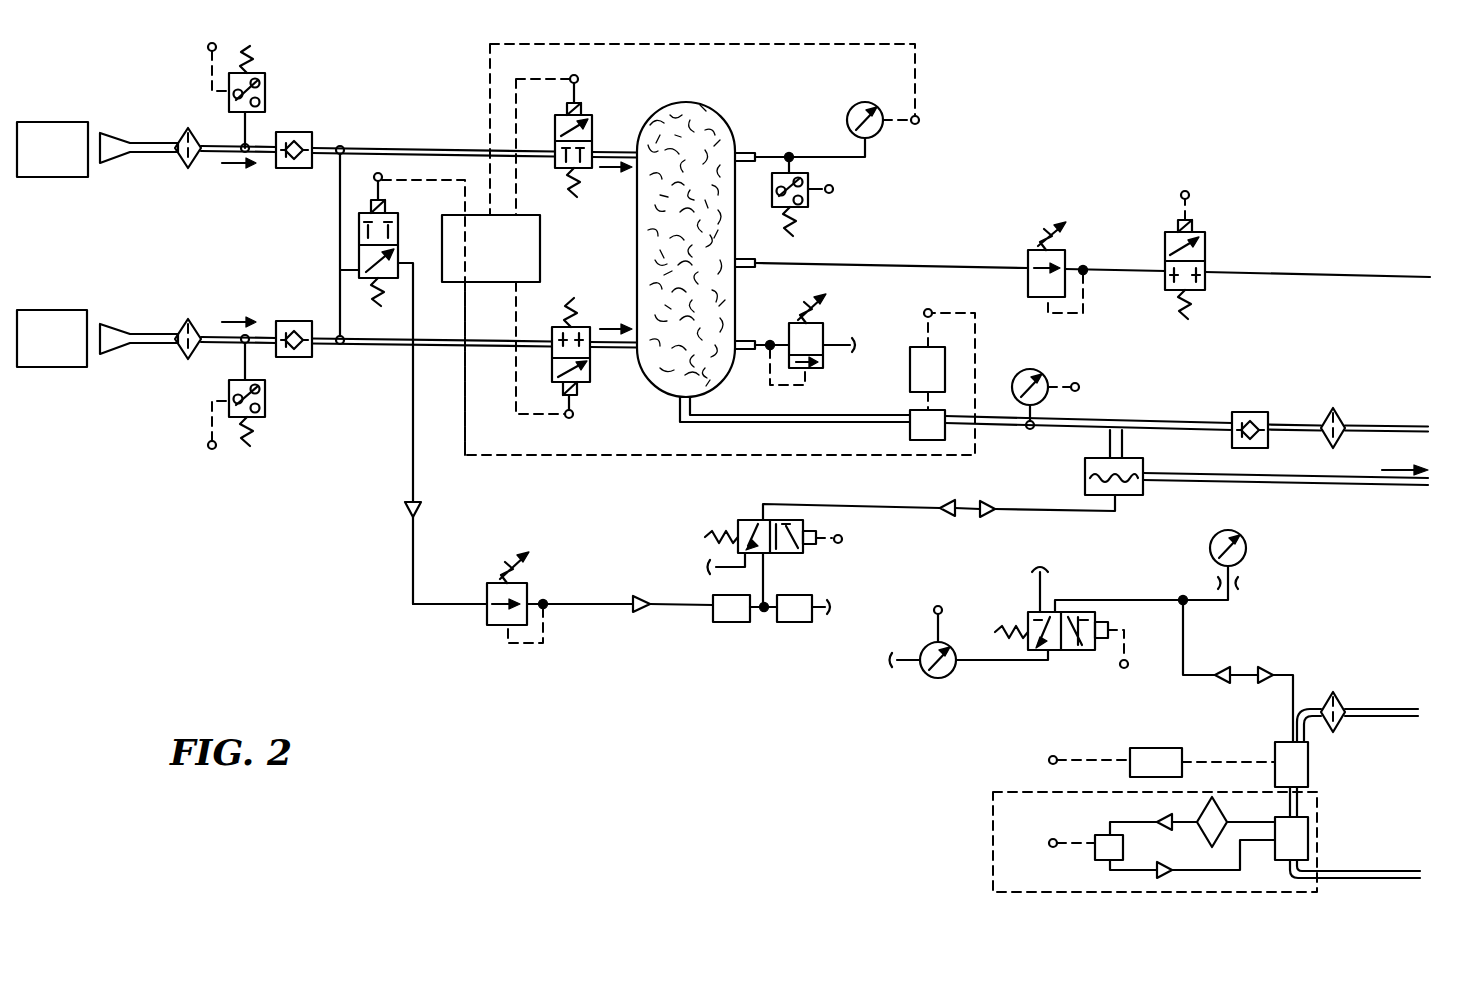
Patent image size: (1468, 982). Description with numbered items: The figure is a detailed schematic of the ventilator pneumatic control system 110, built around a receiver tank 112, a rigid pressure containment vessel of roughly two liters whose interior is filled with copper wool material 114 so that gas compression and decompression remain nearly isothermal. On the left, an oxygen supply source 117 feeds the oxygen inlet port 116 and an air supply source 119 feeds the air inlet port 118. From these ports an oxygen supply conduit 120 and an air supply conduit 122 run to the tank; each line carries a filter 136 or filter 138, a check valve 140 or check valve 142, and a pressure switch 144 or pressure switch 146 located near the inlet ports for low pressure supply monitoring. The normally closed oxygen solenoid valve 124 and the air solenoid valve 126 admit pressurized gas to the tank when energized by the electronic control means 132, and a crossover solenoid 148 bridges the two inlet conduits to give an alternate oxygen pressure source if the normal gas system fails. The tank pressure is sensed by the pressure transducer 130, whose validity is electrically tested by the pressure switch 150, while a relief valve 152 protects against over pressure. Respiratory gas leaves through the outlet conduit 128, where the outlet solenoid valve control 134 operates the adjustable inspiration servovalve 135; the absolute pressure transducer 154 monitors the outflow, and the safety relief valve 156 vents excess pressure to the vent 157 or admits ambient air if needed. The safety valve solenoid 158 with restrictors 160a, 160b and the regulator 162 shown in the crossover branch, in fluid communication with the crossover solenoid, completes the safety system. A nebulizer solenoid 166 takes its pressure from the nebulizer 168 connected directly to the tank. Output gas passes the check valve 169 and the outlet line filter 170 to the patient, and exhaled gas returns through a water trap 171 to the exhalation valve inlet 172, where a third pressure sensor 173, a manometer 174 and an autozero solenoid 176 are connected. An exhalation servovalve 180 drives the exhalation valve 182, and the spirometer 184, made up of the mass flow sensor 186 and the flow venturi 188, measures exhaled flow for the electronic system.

The ventilator pneumatic control system 110 is at (1045, 103).
The receiver tank 112 is at (735, 136).
The copper wool material 114 is at (688, 140).
The oxygen inlet port 116 is at (104, 142).
The oxygen supply source 117 is at (50, 122).
The air inlet port 118 is at (104, 331).
The air supply source 119 is at (50, 310).
The oxygen supply conduit 120 is at (217, 140).
The air supply conduit 122 is at (170, 331).
The oxygen solenoid valve 124 is at (588, 118).
The air solenoid valve 126 is at (590, 380).
The outlet conduit 128 is at (790, 428).
The pressure transducer 130 is at (880, 135).
The electronic control means 132 is at (542, 262).
The outlet solenoid valve control 134 is at (910, 366).
The inspiration servovalve 135 is at (910, 420).
The oxygen filter 136 is at (192, 168).
The air filter 138 is at (196, 362).
The oxygen check valve 140 is at (306, 132).
The air check valve 142 is at (312, 362).
The oxygen pressure switch 144 is at (266, 78).
The air pressure switch 146 is at (268, 404).
The crossover solenoid 148 is at (392, 213).
The pressure switch 150 is at (810, 205).
The relief valve 152 is at (823, 331).
The absolute pressure transducer 154 is at (1045, 376).
The safety relief valve 156 is at (1130, 500).
The vent 157 is at (1265, 485).
The safety valve solenoid 158 is at (790, 553).
The restrictor 160a is at (718, 622).
The restrictor 160b is at (778, 622).
The nebulizer regulator 162 is at (487, 612).
The nebulizer solenoid 166 is at (1205, 243).
The nebulizer 168 is at (1028, 262).
The outlet check valve 169 is at (1242, 412).
The outlet line filter 170 is at (1330, 408).
The water trap 171 is at (1333, 692).
The exhalation valve inlet 172 is at (1360, 709).
The third pressure sensor 173 is at (930, 680).
The manometer 174 is at (1246, 550).
The autozero solenoid 176 is at (1060, 650).
The exhalation servovalve 180 is at (1165, 748).
The exhalation valve 182 is at (1308, 781).
The spirometer 184 is at (993, 850).
The mass flow sensor 186 is at (1100, 835).
The flow venturi 188 is at (1308, 846).